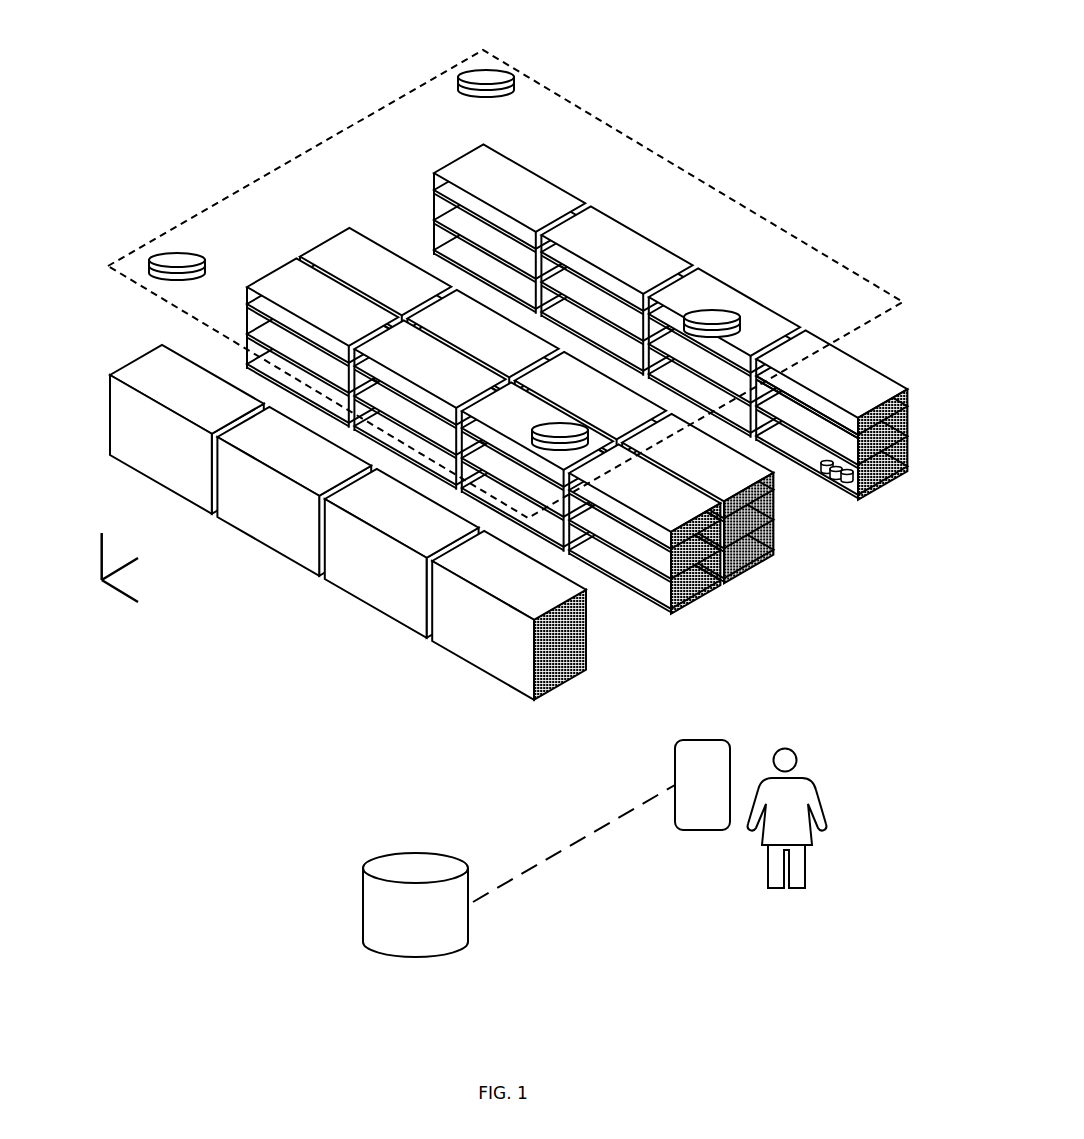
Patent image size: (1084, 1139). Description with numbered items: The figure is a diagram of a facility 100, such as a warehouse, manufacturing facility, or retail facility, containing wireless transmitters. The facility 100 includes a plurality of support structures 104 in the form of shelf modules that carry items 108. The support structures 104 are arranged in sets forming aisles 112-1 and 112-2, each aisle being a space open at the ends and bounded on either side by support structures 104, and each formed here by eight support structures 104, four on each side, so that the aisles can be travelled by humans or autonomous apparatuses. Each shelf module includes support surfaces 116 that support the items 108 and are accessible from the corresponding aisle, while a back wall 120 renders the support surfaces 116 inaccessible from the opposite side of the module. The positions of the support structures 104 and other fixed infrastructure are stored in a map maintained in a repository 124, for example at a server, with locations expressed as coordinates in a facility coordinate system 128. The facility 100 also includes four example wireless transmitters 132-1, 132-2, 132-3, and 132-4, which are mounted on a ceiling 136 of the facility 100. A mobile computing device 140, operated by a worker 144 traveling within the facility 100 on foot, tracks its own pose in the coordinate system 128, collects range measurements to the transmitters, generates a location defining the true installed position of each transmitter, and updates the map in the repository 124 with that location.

The facility 100 is at (684, 72).
The support structure 104 is at (833, 376).
The items 108 is at (862, 477).
The aisle 112-1 is at (598, 621).
The aisle 112-2 is at (810, 497).
The support surface 116 is at (836, 422).
The back wall 120 is at (403, 606).
The repository 124 is at (397, 923).
The facility coordinate system 128 is at (101, 585).
The wireless transmitter 132-1 is at (143, 265).
The wireless transmitter 132-2 is at (470, 72).
The wireless transmitter 132-3 is at (712, 308).
The wireless transmitter 132-4 is at (560, 424).
The ceiling 136 is at (297, 158).
The mobile computing device 140 is at (685, 798).
The worker 144 is at (778, 888).